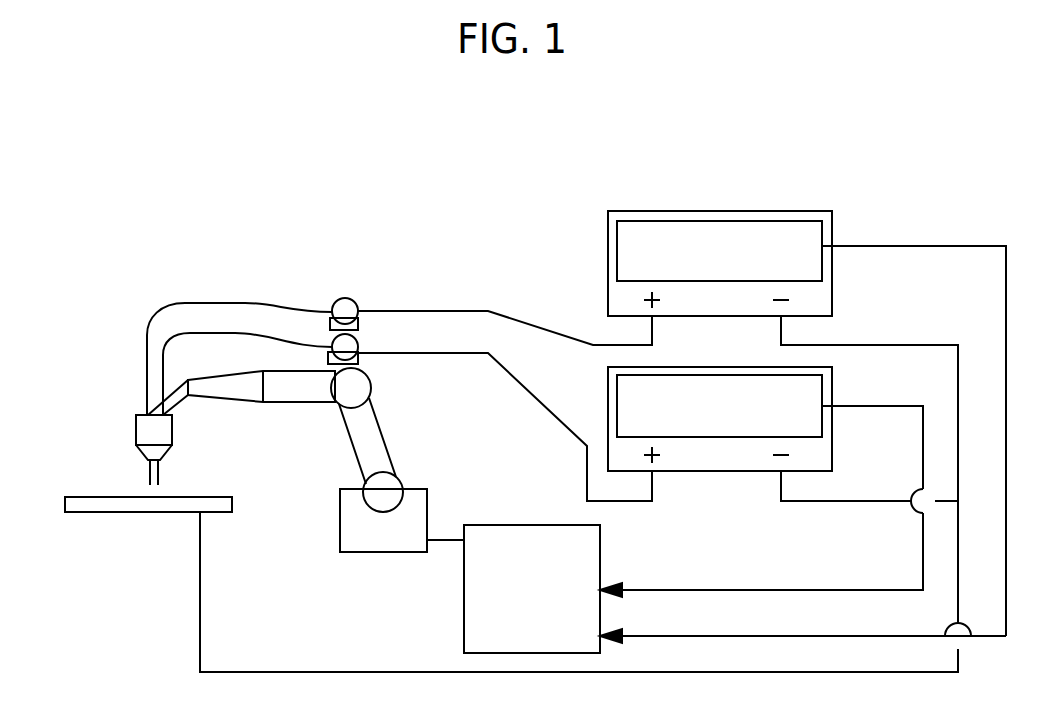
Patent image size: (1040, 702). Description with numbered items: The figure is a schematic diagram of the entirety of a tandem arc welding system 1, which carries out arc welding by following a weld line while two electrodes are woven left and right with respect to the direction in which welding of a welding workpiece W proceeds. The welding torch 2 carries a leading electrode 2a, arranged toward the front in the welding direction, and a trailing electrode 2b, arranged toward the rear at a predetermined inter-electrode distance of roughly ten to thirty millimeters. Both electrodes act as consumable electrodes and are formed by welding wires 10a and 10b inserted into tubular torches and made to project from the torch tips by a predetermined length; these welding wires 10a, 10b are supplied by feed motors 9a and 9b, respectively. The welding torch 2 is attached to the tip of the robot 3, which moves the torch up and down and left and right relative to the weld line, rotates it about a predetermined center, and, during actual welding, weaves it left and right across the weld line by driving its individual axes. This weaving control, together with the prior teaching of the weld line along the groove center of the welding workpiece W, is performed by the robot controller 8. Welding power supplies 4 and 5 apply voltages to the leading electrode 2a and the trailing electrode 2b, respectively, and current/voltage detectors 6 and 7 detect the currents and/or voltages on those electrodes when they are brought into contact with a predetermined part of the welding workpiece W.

The tandem arc welding system 1 is at (262, 176).
The welding torch 2 is at (136, 432).
The leading electrode 2a is at (150, 463).
The trailing electrode 2b is at (160, 476).
The robot 3 is at (381, 552).
The welding power supply 4 is at (603, 441).
The welding power supply 5 is at (758, 478).
The current/voltage detector 6 is at (617, 240).
The current/voltage detector 7 is at (617, 395).
The robot controller 8 is at (600, 540).
The feed motor 9a is at (356, 302).
The feed motor 9b is at (358, 340).
The welding wire 10a is at (147, 314).
The welding wire 10b is at (180, 354).
The welding workpiece W is at (104, 512).